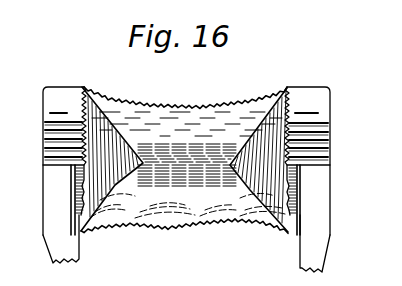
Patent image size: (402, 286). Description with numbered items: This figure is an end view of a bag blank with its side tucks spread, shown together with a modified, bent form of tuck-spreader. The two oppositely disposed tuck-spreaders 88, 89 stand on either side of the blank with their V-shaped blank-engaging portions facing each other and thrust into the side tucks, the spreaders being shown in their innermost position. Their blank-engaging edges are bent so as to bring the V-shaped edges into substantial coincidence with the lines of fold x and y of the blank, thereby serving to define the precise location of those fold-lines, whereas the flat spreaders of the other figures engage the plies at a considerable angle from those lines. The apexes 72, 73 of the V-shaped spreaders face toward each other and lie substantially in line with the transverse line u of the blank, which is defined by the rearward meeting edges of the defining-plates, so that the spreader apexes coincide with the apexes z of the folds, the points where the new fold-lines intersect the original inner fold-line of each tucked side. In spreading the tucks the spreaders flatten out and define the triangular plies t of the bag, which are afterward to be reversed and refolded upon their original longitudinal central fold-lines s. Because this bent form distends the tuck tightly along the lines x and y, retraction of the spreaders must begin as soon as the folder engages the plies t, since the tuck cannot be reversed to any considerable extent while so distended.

The tuck-spreader 89 is at (70, 108).
The tuck-spreader 88 is at (315, 108).
The longitudinal central fold-line s is at (100, 157).
The tuck-spreader 73 is at (138, 168).
The tuck-spreader 72 is at (250, 168).
The triangular ply t is at (100, 191).
The line of fold x is at (117, 135).
The apex z is at (143, 163).
The line u is at (183, 155).
The line of fold y is at (120, 168).